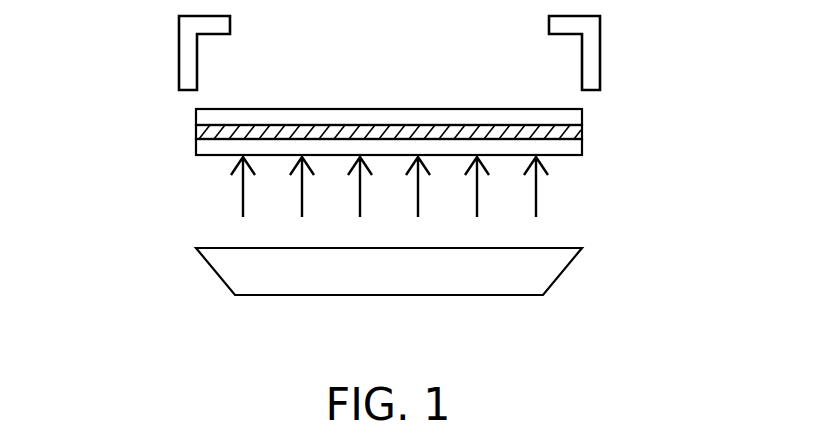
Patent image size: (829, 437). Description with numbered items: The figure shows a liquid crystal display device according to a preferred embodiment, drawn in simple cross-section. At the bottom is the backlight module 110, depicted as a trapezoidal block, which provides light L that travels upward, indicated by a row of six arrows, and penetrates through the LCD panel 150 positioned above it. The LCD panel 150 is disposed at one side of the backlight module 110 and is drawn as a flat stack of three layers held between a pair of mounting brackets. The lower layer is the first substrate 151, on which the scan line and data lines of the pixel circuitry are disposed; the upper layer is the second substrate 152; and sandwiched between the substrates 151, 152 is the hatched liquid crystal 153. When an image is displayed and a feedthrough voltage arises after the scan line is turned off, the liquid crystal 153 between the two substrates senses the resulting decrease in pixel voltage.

The backlight module 110 is at (567, 268).
The LCD panel 150 is at (364, 131).
The first substrate 151 is at (582, 148).
The second substrate 152 is at (582, 116).
The liquid crystal 153 is at (582, 132).
The light L is at (537, 207).